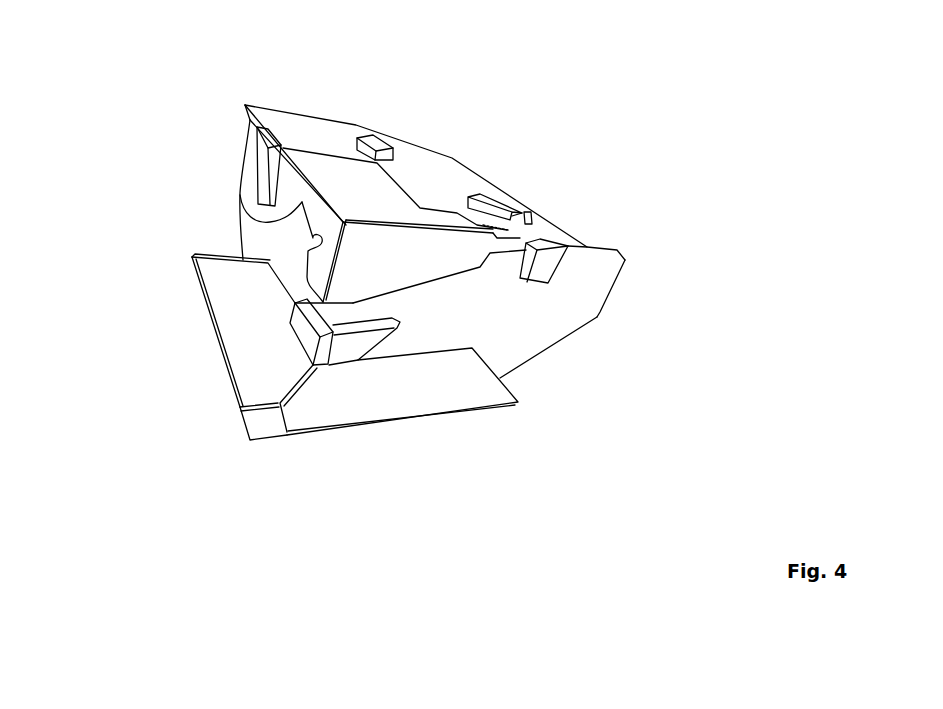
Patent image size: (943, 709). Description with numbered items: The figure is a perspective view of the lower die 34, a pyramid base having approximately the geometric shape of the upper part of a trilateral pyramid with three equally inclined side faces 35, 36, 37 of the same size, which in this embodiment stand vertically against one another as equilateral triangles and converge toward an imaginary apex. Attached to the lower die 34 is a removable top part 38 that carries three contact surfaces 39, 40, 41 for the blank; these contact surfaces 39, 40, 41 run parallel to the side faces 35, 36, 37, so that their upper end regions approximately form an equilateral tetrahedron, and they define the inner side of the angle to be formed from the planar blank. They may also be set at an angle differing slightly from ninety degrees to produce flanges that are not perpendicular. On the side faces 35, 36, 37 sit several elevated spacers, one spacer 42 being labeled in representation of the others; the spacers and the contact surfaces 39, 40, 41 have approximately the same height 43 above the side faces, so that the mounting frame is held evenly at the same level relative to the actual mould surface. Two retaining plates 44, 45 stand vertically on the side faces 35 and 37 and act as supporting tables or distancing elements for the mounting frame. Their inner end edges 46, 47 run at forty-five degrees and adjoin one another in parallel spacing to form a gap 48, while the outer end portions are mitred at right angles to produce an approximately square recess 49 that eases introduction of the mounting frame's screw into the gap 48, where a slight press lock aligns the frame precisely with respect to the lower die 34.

The lower die 34 is at (450, 133).
The side face 35 is at (256, 245).
The side face 36 is at (306, 126).
The side face 37 is at (543, 327).
The top part 38 is at (391, 196).
The contact surface 39 is at (240, 197).
The contact surface 40 is at (348, 178).
The contact surface 41 is at (447, 276).
The spacer 42 is at (502, 203).
The height 43 is at (540, 231).
The retaining plate 44 is at (237, 307).
The retaining plate 45 is at (465, 378).
The end edge 46 is at (297, 388).
The end edge 47 is at (280, 402).
The gap 48 is at (282, 400).
The recess 49 is at (258, 422).